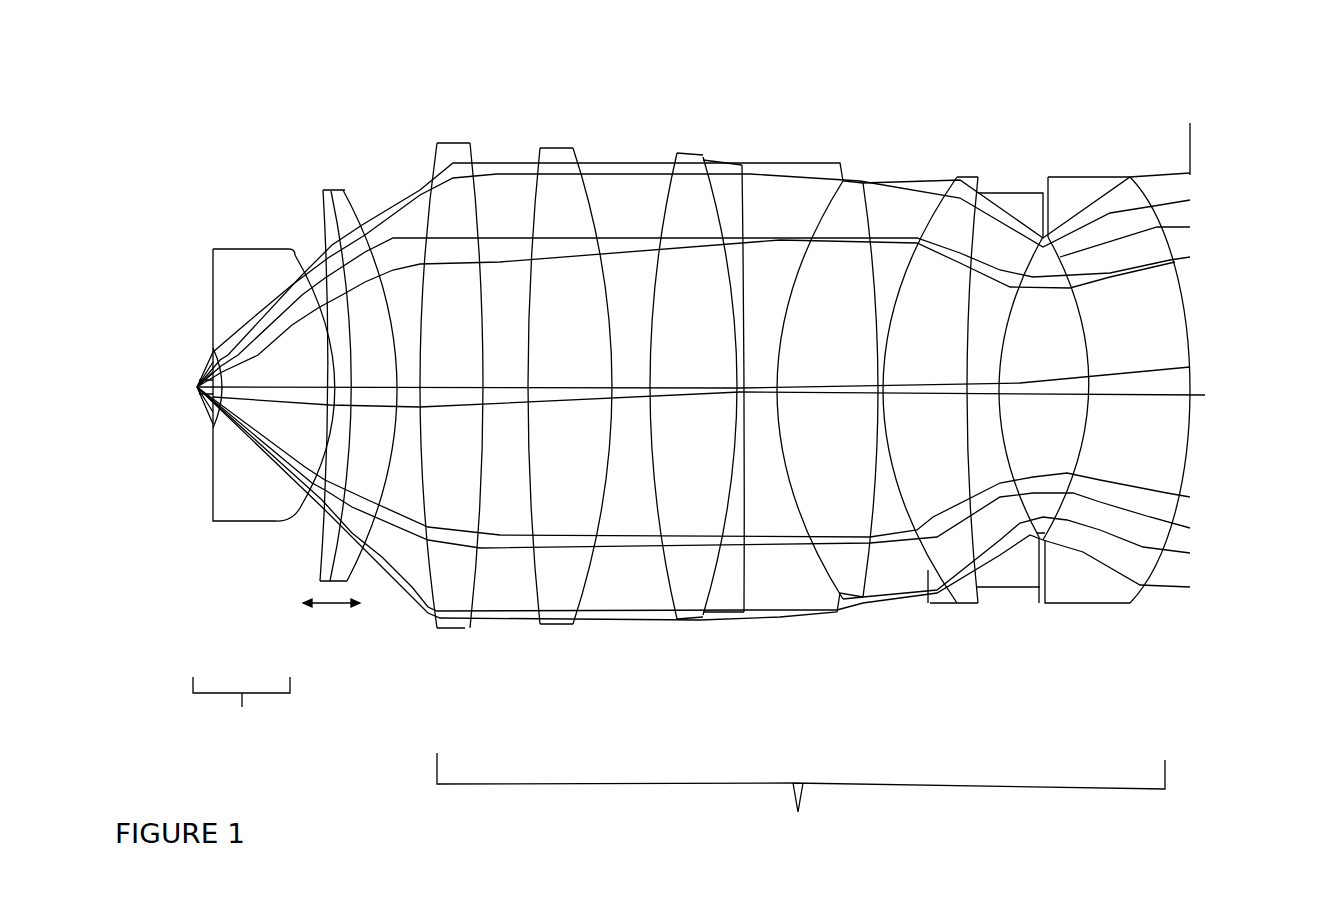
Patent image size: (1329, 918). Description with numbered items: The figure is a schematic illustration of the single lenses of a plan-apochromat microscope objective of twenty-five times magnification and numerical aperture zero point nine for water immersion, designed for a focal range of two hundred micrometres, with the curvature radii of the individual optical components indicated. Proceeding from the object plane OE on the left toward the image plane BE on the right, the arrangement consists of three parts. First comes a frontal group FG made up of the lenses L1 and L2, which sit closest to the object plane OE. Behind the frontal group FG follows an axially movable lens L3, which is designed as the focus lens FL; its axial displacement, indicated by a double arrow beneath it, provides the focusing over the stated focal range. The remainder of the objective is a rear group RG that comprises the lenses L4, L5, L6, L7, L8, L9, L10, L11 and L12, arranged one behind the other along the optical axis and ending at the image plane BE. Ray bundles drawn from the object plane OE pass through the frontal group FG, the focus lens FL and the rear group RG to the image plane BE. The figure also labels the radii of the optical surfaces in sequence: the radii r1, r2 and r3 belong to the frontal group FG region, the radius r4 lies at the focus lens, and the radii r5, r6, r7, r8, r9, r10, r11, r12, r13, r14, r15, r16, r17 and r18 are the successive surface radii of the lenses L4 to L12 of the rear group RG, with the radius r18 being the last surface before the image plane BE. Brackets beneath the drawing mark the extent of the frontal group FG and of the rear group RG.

The object plane OE is at (153, 388).
The image plane BE is at (1243, 271).
The frontal group FG is at (247, 451).
The rear group RG is at (814, 456).
The lens L1 is at (201, 408).
The lens L2 is at (270, 406).
The lens L3 is at (326, 396).
The focus lens FL is at (326, 396).
The lens L4 is at (461, 396).
The lens L5 is at (566, 396).
The lens L6 is at (671, 396).
The lens L7 is at (725, 396).
The lens L8 is at (831, 396).
The lens L9 is at (928, 396).
The lens L10 is at (1000, 396).
The lens L11 is at (1065, 396).
The lens L12 is at (1126, 396).
The radius r1 is at (243, 397).
The radius r2 is at (288, 500).
The radius r3 is at (318, 533).
The radius r4 is at (390, 580).
The radius r5 is at (453, 580).
The radius r6 is at (490, 580).
The radius r7 is at (520, 580).
The radius r8 is at (590, 577).
The radius r9 is at (667, 582).
The radius r10 is at (720, 580).
The radius r11 is at (760, 580).
The radius r12 is at (817, 580).
The radius r13 is at (890, 580).
The radius r14 is at (930, 580).
The radius r15 is at (990, 560).
The radius r16 is at (1020, 535).
The radius r17 is at (1065, 515).
The radius r18 is at (1187, 610).